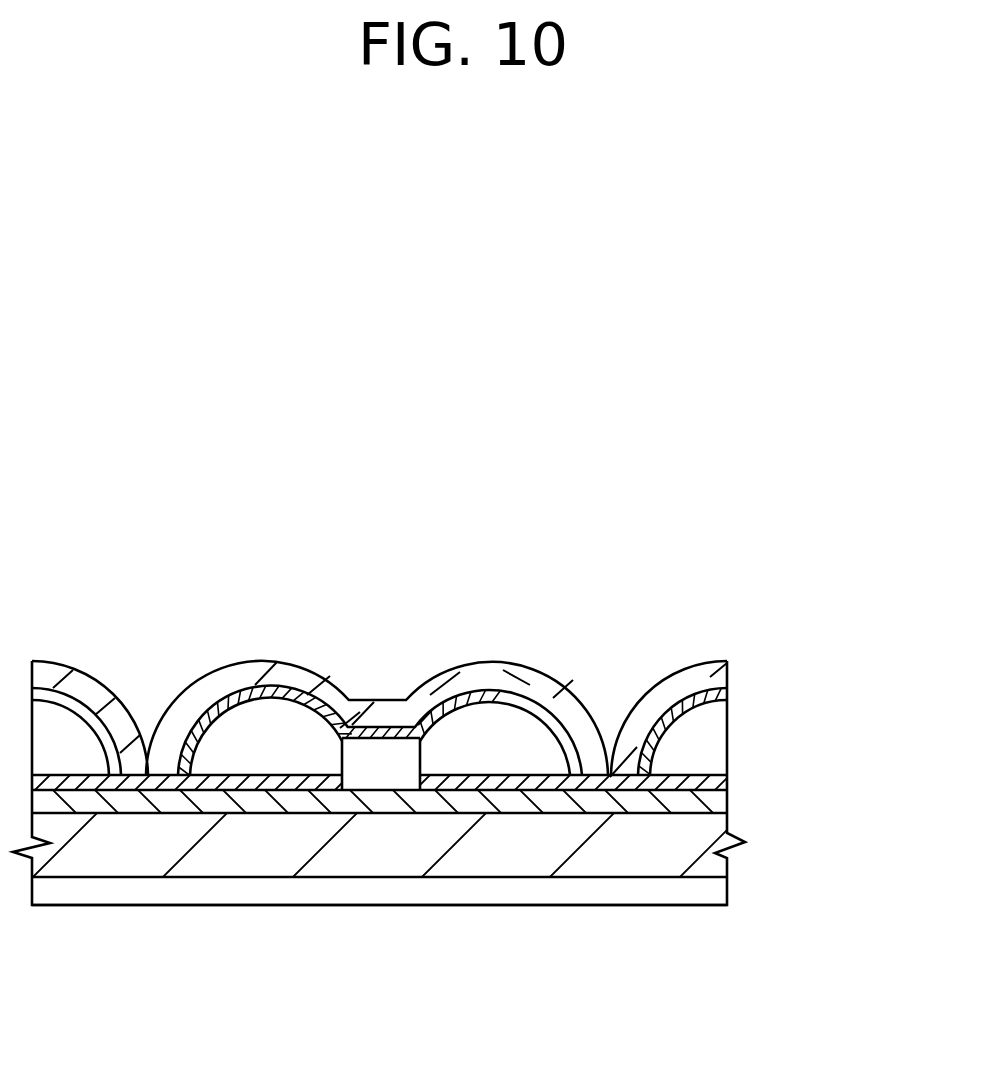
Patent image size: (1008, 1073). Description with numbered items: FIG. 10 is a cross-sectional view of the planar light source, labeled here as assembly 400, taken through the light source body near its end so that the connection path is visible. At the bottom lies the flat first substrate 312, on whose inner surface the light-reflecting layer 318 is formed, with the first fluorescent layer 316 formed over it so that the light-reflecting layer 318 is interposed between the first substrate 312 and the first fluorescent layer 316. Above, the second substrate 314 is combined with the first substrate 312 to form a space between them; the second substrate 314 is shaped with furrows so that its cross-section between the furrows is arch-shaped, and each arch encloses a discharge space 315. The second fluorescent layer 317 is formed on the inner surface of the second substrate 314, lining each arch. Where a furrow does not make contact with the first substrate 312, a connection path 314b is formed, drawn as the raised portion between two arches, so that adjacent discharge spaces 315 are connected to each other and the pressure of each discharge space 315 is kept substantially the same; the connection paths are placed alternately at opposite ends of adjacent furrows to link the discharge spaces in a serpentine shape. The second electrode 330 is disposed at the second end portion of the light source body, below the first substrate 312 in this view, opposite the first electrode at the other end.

The light emitting device 400 is at (664, 613).
The second substrate 314 is at (727, 675).
The connection path 314b is at (392, 756).
The discharge space 315 is at (503, 748).
The second fluorescent layer 317 is at (727, 694).
The first fluorescent layer 316 is at (728, 784).
The light-reflecting layer 318 is at (717, 802).
The first substrate 312 is at (728, 833).
The second electrode 330 is at (717, 893).